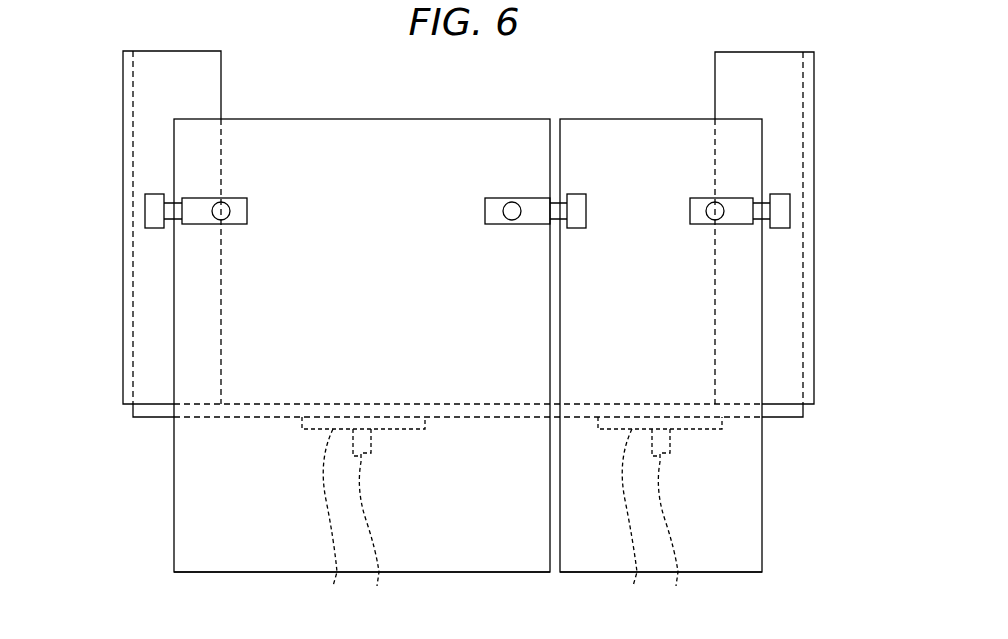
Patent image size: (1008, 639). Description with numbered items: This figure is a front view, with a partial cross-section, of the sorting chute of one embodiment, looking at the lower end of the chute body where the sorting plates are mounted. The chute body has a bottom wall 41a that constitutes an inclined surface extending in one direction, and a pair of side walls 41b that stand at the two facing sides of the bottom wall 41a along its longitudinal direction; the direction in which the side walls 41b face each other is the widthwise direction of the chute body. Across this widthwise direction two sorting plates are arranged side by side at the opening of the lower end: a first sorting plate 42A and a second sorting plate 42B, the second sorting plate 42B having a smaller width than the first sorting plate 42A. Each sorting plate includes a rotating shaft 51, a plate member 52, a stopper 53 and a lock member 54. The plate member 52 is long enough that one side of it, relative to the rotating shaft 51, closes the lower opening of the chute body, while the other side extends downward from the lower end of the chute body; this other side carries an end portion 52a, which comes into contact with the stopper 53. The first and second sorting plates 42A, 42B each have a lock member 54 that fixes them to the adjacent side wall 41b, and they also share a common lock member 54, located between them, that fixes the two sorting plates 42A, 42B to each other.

The bottom wall 41a is at (788, 418).
The side walls 41b is at (138, 100).
The first sorting plate 42A is at (150, 469).
The second sorting plate 42B is at (773, 472).
The rotating shaft 51 is at (512, 516).
The plate member 52 is at (403, 168).
The end portion 52a is at (485, 553).
The stopper 53 is at (520, 522).
The lock member 54 is at (233, 195).